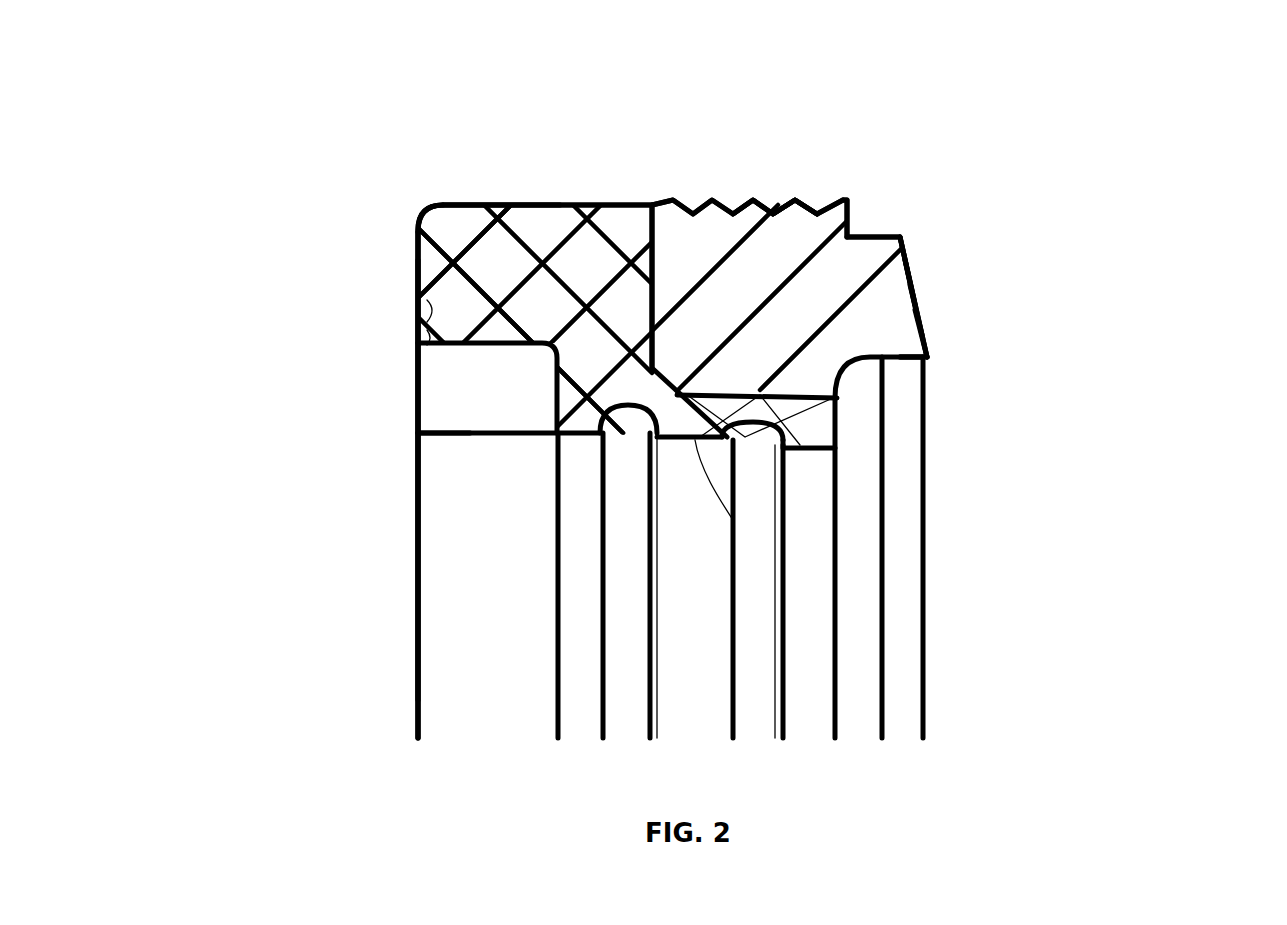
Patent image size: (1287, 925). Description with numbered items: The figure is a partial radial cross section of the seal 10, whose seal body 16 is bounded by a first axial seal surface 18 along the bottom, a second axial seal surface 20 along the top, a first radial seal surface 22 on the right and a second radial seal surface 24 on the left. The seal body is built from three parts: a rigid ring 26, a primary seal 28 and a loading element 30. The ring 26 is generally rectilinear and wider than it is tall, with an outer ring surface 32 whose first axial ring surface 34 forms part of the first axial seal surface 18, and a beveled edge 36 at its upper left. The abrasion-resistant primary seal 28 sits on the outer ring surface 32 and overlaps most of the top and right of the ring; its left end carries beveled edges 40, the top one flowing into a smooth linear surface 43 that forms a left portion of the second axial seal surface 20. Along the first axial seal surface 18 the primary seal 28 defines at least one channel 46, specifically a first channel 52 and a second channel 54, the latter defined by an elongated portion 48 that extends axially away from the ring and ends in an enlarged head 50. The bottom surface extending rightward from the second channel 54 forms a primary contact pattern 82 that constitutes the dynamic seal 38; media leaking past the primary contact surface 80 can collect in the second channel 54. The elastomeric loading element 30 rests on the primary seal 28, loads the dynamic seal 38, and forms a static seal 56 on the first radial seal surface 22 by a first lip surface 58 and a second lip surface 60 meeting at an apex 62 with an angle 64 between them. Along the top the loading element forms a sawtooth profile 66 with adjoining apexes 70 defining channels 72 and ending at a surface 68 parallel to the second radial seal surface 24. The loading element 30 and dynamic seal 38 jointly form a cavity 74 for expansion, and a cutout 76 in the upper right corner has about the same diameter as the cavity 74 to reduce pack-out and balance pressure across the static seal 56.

The seal 10 is at (758, 172).
The seal body 16 is at (416, 268).
The first axial seal surface 18 is at (480, 433).
The second axial seal surface 20 is at (550, 205).
The first radial seal surface 22 is at (850, 235).
The second radial seal surface 24 is at (416, 254).
The ring 26 is at (500, 394).
The primary seal 28 is at (458, 238).
The loading element 30 is at (905, 305).
The outer ring surface 32 is at (416, 386).
The first axial ring surface 34 is at (434, 437).
The beveled edge 36 is at (416, 340).
The dynamic seal 38 is at (840, 500).
The beveled edges 40 is at (420, 216).
The smooth linear surface 43 is at (498, 205).
The channel 46 is at (600, 515).
The elongated portion 48 is at (683, 443).
The enlarged head 50 is at (935, 357).
The first channel 52 is at (630, 420).
The second channel 54 is at (807, 462).
The static seal 56 is at (945, 357).
The first lip surface 58 is at (920, 330).
The second lip surface 60 is at (912, 322).
The apex 62 is at (1080, 315).
The angle 64 is at (886, 343).
The sawtooth profile 66 is at (797, 193).
The surface 68 is at (857, 207).
The apexes 70 is at (762, 207).
The channels 72 is at (691, 212).
The cavity 74 is at (820, 440).
The cutout 76 is at (905, 290).
The primary contact surface 80 is at (835, 458).
The primary contact pattern 82 is at (673, 440).